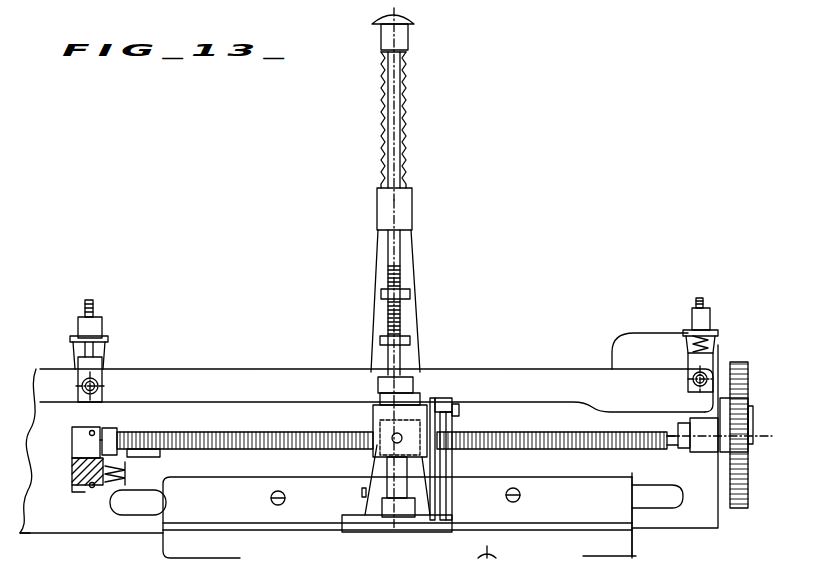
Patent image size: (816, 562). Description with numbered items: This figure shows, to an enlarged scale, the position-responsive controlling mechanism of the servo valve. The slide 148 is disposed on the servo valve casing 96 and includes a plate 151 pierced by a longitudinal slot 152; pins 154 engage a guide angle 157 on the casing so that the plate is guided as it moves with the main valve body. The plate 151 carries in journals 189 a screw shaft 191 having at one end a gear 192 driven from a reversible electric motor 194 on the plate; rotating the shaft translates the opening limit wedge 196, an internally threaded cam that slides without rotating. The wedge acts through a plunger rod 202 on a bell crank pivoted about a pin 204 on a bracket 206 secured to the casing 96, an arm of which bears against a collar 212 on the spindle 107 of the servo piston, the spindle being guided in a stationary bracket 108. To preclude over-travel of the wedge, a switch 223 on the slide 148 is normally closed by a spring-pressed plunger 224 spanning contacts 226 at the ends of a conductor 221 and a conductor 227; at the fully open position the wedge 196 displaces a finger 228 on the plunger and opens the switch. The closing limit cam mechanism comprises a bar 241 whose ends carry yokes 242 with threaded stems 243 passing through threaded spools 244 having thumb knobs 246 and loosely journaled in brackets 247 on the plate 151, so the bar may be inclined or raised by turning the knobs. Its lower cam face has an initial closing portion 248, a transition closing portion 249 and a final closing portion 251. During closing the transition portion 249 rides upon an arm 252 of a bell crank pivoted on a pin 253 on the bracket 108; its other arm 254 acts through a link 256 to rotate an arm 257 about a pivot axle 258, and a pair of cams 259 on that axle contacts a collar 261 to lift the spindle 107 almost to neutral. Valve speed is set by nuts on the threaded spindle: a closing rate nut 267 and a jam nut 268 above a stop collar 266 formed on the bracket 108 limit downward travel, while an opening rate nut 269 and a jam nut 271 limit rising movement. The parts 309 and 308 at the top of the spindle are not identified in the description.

The screw head 309 is at (411, 36).
The threaded screw 308 is at (405, 92).
The spindle 107 is at (396, 160).
The stationary bracket 108 is at (410, 197).
The jam nut 268 is at (411, 288).
The closing rate nut 267 is at (412, 294).
The stop collar 266 is at (410, 303).
The opening rate nut 269 is at (409, 333).
The jam nut 271 is at (409, 345).
The collar 261 is at (385, 376).
The cams 259 is at (383, 398).
The pivot axle 258 is at (373, 410).
The plunger rod 202 is at (372, 430).
The opening limit wedge 196 is at (160, 426).
The screw shaft 191 is at (670, 449).
The journals 189 is at (108, 430).
The pin 204 is at (362, 492).
The bracket 206 is at (372, 508).
The collar 212 is at (405, 512).
The arm 252 is at (447, 398).
The arm 257 is at (432, 400).
The pin 253 is at (459, 412).
The arm 254 is at (447, 462).
The link 256 is at (441, 492).
The guide angle 157 is at (264, 518).
The pins 154 is at (271, 497).
The plate 151 is at (718, 527).
The longitudinal slot 152 is at (675, 509).
The gear 192 is at (749, 471).
The bar 241 is at (236, 376).
The initial closing portion 248 is at (518, 400).
The transition closing portion 249 is at (585, 400).
The final closing portion 251 is at (648, 411).
The reversible electric motor 194 is at (642, 334).
The threaded stems 243 is at (91, 302).
The threaded spools 244 is at (102, 322).
The thumb knobs 246 is at (108, 339).
The brackets 247 is at (73, 358).
The yokes 242 is at (95, 367).
The conductor 221 is at (88, 447).
The switch 223 is at (74, 465).
The finger 228 is at (127, 470).
The contacts 226 is at (91, 430).
The conductor 227 is at (72, 492).
The spring-pressed plunger 224 is at (138, 502).
The slide 148 is at (37, 539).
The servo valve casing 96 is at (638, 554).